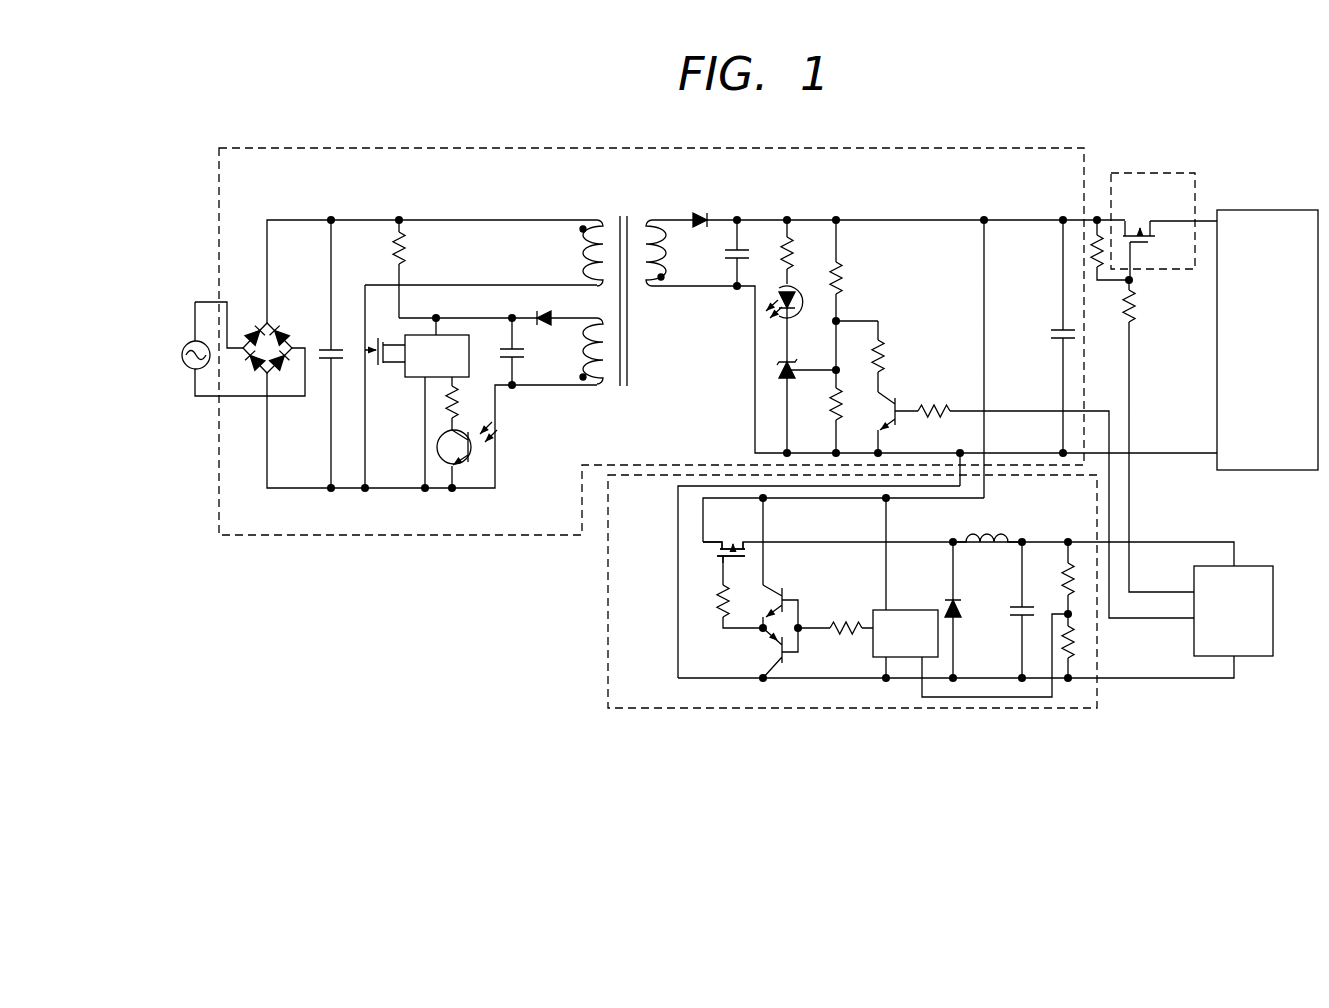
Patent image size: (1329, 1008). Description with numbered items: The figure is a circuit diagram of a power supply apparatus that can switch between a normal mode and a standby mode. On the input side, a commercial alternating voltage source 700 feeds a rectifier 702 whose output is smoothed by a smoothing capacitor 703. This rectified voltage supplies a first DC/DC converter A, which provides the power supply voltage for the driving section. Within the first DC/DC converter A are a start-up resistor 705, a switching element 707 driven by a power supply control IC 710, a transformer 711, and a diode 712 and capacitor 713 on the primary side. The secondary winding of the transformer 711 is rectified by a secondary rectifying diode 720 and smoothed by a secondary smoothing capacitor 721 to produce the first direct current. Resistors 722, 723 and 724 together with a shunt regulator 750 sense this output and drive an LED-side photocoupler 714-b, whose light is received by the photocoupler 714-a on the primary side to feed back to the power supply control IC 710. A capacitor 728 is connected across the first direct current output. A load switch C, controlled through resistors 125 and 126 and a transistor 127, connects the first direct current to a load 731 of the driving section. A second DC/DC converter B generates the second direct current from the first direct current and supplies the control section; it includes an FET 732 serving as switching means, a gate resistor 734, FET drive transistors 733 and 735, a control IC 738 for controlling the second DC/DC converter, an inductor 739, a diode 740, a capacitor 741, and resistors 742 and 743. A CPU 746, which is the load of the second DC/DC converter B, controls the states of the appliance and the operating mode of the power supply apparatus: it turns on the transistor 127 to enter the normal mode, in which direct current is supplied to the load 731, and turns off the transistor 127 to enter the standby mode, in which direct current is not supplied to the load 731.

The first DC/DC converter A is at (340, 147).
The second DC/DC converter B is at (660, 708).
The load switch C is at (1155, 173).
The commercial alternating voltage source 700 is at (186, 344).
The rectifier 702 is at (254, 324).
The smoothing capacitor 703 is at (325, 347).
The start-up resistor 705 is at (407, 250).
The switching element 707 is at (364, 347).
The power supply control IC 710 is at (418, 378).
The transformer 711 is at (618, 216).
The diode 712 is at (531, 313).
The capacitor 713 is at (525, 358).
The photocoupler 714-a is at (472, 458).
The LED-side photocoupler 714-b is at (768, 308).
The secondary rectifying diode 720 is at (700, 213).
The secondary smoothing capacitor 721 is at (725, 256).
The resistor 722 is at (796, 250).
The resistor 723 is at (845, 278).
The resistor 724 is at (828, 404).
The shunt regulator 750 is at (778, 372).
The resistor 125 is at (886, 345).
The resistor 126 is at (937, 402).
The transistor 127 is at (902, 415).
The capacitor 728 is at (1055, 330).
The load 731 is at (1266, 210).
The FET 732 is at (735, 545).
The FET drive transistor 733 is at (792, 596).
The gate resistor 734 is at (716, 600).
The FET drive transistor 735 is at (765, 655).
The control IC 738 is at (872, 646).
The inductor 739 is at (985, 556).
The diode 740 is at (949, 598).
The capacitor 741 is at (1012, 612).
The resistor 742 is at (1060, 578).
The resistor 743 is at (1078, 642).
The CPU 746 is at (1260, 566).